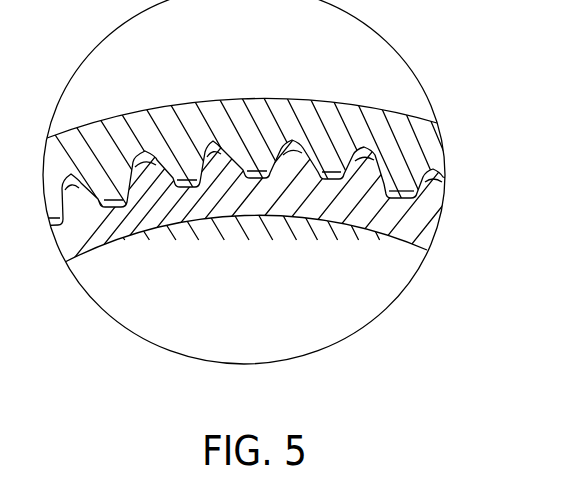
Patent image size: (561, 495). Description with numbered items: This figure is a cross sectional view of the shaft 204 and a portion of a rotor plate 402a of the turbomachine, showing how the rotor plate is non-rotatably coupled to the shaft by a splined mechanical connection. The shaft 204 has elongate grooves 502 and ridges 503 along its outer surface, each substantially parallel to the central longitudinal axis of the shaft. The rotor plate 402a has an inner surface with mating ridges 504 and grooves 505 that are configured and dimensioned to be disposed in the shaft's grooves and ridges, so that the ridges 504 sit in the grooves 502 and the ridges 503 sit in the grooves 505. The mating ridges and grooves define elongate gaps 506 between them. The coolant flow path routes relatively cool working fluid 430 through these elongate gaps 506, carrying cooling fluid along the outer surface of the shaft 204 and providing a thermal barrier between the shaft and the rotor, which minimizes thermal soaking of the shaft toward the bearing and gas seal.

The shaft 204 is at (262, 203).
The rotor plate 402a is at (237, 108).
The working fluid 430 is at (130, 143).
The elongate grooves 502 is at (332, 218).
The ridges 503 is at (295, 142).
The mating ridges 504 is at (440, 158).
The grooves 505 is at (212, 138).
The elongate gaps 506 is at (405, 171).